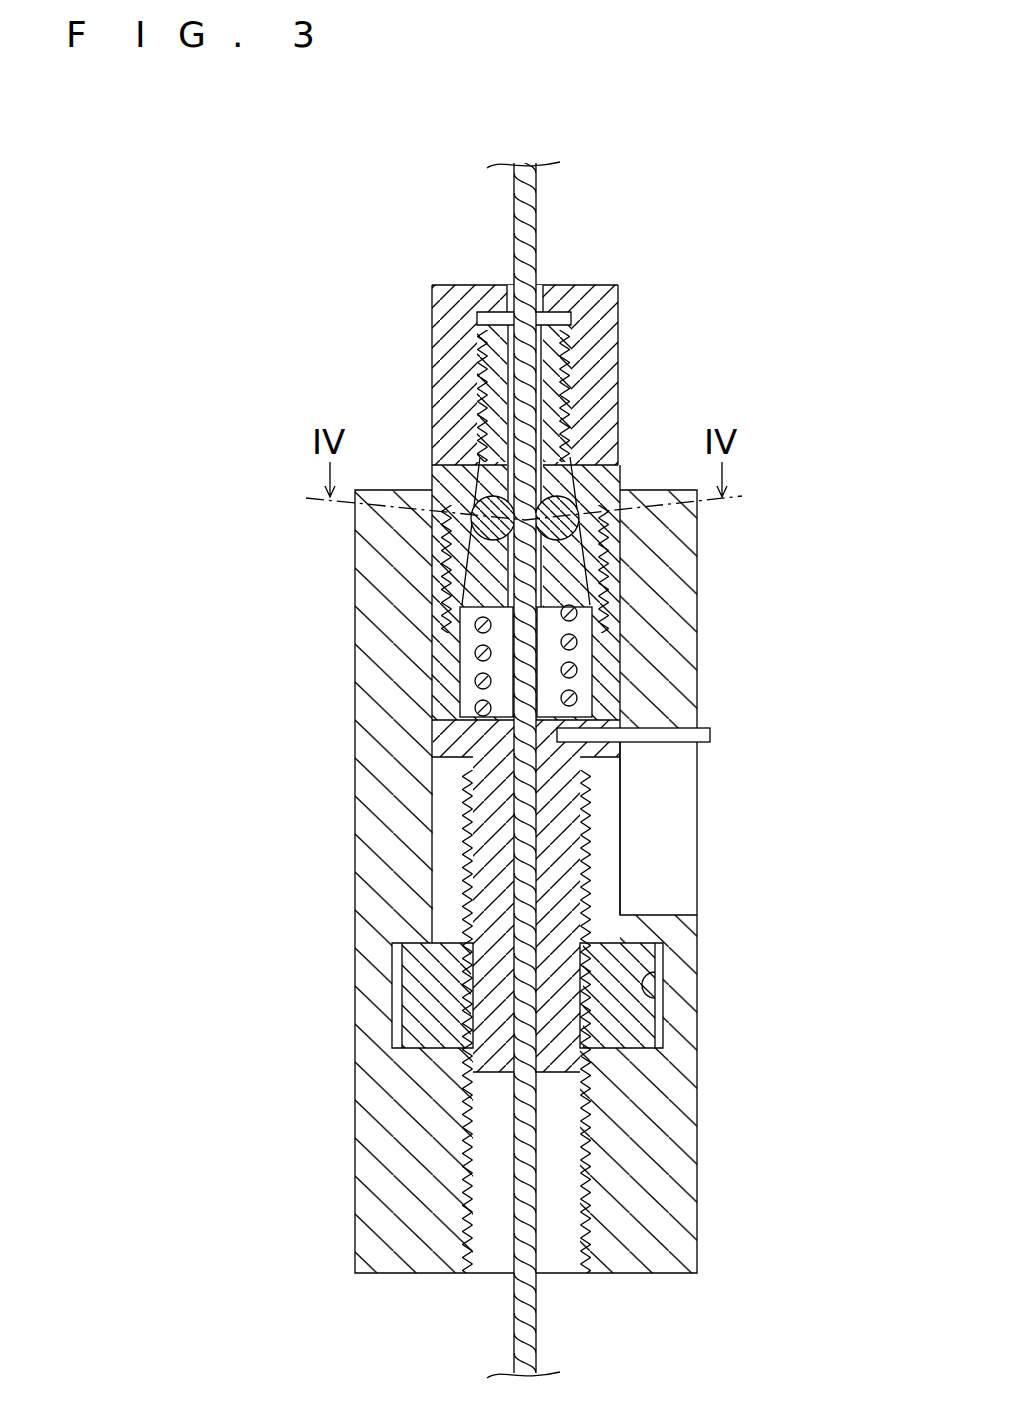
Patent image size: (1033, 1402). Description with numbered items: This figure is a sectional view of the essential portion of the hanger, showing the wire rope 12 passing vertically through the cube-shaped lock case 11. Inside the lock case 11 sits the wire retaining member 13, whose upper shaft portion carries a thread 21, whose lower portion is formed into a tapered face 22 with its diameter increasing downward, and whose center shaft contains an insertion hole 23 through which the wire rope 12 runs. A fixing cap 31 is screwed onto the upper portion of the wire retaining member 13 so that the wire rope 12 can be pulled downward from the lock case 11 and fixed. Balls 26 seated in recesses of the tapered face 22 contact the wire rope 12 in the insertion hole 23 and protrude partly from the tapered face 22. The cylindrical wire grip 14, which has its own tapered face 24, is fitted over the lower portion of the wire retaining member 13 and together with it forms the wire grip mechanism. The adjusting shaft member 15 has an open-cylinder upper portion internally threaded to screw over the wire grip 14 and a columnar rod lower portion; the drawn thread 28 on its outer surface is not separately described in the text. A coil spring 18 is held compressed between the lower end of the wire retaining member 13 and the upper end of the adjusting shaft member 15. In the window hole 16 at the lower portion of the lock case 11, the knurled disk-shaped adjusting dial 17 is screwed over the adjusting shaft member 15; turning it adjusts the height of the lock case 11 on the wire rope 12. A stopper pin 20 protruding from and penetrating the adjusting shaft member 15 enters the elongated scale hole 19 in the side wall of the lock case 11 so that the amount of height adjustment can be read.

The lock case 11 is at (665, 1110).
The wire rope 12 is at (522, 203).
The wire retaining member 13 is at (548, 384).
The wire grip 14 is at (620, 612).
The adjusting shaft member 15 is at (490, 812).
The window hole 16 is at (655, 992).
The adjusting dial 17 is at (430, 997).
The coil spring 18 is at (472, 680).
The scale hole 19 is at (658, 915).
The stopper pin 20 is at (710, 735).
The thread 21 is at (482, 356).
The tapered face 22 is at (620, 563).
The insertion hole 23 is at (543, 465).
The tapered face 24 is at (442, 578).
The balls 26 is at (620, 517).
The thread 28 is at (465, 893).
The fixing cap 31 is at (618, 291).